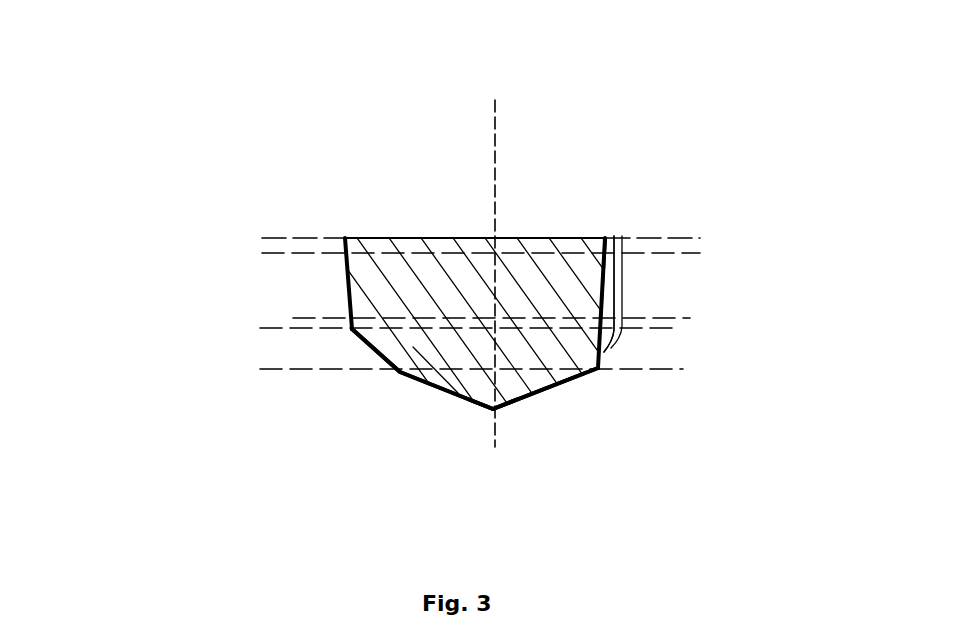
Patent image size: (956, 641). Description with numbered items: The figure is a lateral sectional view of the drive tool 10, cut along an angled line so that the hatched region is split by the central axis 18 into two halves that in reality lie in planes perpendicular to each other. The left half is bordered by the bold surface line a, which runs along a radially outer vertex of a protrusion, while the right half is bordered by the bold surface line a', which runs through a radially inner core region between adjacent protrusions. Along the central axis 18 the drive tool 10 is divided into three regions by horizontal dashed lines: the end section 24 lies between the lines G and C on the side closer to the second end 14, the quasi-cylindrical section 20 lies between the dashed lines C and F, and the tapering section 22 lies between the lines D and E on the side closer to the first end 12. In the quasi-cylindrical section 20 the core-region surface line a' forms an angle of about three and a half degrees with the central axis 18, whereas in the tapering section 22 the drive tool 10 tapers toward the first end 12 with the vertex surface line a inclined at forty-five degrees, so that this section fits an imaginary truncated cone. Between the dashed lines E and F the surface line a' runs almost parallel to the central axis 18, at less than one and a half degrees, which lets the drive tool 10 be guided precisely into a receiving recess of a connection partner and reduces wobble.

The drive tool 10 is at (306, 84).
The first end 12 is at (518, 440).
The second end 14 is at (533, 200).
The central axis 18 is at (497, 140).
The quasi-cylindrical section 20 is at (390, 276).
The tapering section 22 is at (402, 343).
The end section 24 is at (370, 246).
The surface line a is at (422, 393).
The surface line a' is at (558, 411).
The dashed line C is at (303, 260).
The line D is at (272, 327).
The dashed line E is at (267, 375).
The dashed line F is at (677, 318).
The line G is at (293, 238).